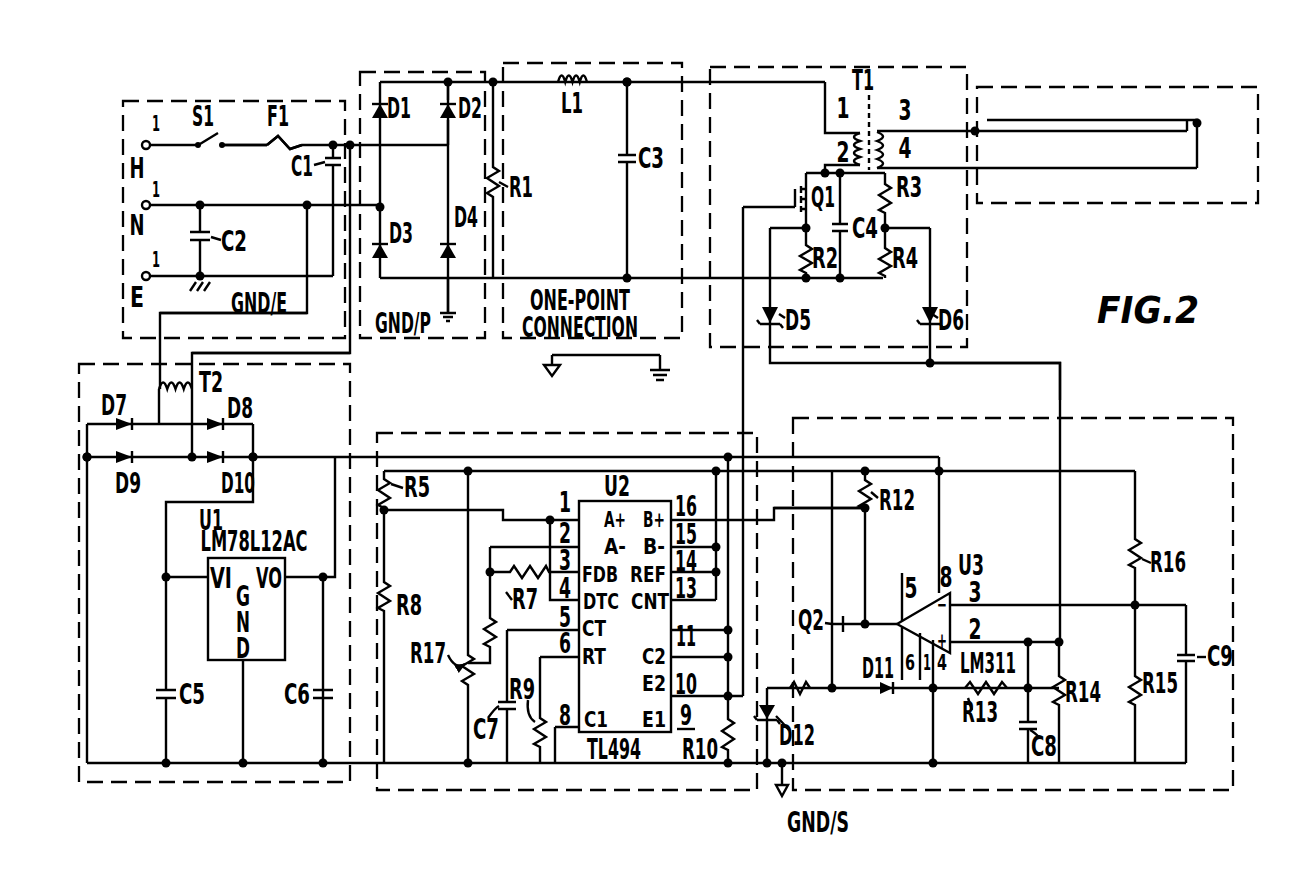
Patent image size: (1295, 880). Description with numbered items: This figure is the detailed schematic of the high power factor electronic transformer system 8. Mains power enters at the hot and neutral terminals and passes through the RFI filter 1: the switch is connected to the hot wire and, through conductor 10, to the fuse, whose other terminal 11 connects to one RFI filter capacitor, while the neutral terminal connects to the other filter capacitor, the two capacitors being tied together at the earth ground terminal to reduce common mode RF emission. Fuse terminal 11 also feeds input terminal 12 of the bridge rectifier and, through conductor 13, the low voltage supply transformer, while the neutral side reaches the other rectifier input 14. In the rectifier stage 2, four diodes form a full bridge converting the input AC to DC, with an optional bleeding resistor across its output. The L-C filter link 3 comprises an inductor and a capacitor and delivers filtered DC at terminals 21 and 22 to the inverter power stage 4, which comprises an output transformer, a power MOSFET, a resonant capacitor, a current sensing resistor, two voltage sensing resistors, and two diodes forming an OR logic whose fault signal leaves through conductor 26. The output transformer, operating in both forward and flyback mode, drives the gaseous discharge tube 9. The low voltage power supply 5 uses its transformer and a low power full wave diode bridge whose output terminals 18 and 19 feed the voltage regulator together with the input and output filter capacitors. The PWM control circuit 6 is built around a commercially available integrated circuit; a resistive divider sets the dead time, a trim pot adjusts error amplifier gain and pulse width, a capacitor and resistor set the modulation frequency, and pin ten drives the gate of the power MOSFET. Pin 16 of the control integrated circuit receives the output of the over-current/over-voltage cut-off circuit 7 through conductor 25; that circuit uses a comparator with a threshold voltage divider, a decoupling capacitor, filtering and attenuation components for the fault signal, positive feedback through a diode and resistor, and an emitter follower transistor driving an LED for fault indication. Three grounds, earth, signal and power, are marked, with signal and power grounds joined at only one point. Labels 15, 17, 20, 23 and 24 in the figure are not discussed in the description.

The RFI filter 1 is at (270, 99).
The rectifier stage 2 is at (457, 69).
The L-C filter link 3 is at (619, 65).
The inverter power stage 4 is at (871, 66).
The low voltage power supply 5 is at (353, 412).
The PWM control circuit 6 is at (595, 430).
The over-voltage/over-current cut-off circuit 7 is at (1166, 416).
The high power factor electronic transformer system 8 is at (146, 38).
The gaseous discharge tube 9 is at (1126, 84).
The conductor 10 is at (246, 141).
The fuse terminal 11 is at (296, 139).
The input terminal of the bridge rectifier 12 is at (386, 209).
The conductor 13 is at (168, 307).
The input terminal of the bridge rectifier 14 is at (453, 136).
The AC feed conductor to low-voltage transformer 15 is at (287, 347).
The pin 16 of integrated circuit U2 16 is at (446, 90).
The power ground 17 is at (465, 290).
The output terminal of diode bridge D7 through D10 18 is at (90, 465).
The output terminal of diode bridge D7 through D10 19 is at (260, 462).
The regulated voltage output node 20 is at (317, 563).
The output terminal of the L-C link 21 is at (631, 87).
The output terminal of the L-C link 22 is at (631, 275).
The comparator reference node 23 is at (1143, 603).
The current sense node 24 is at (890, 227).
The conductor 25 is at (846, 516).
The conductor 26 is at (1048, 358).